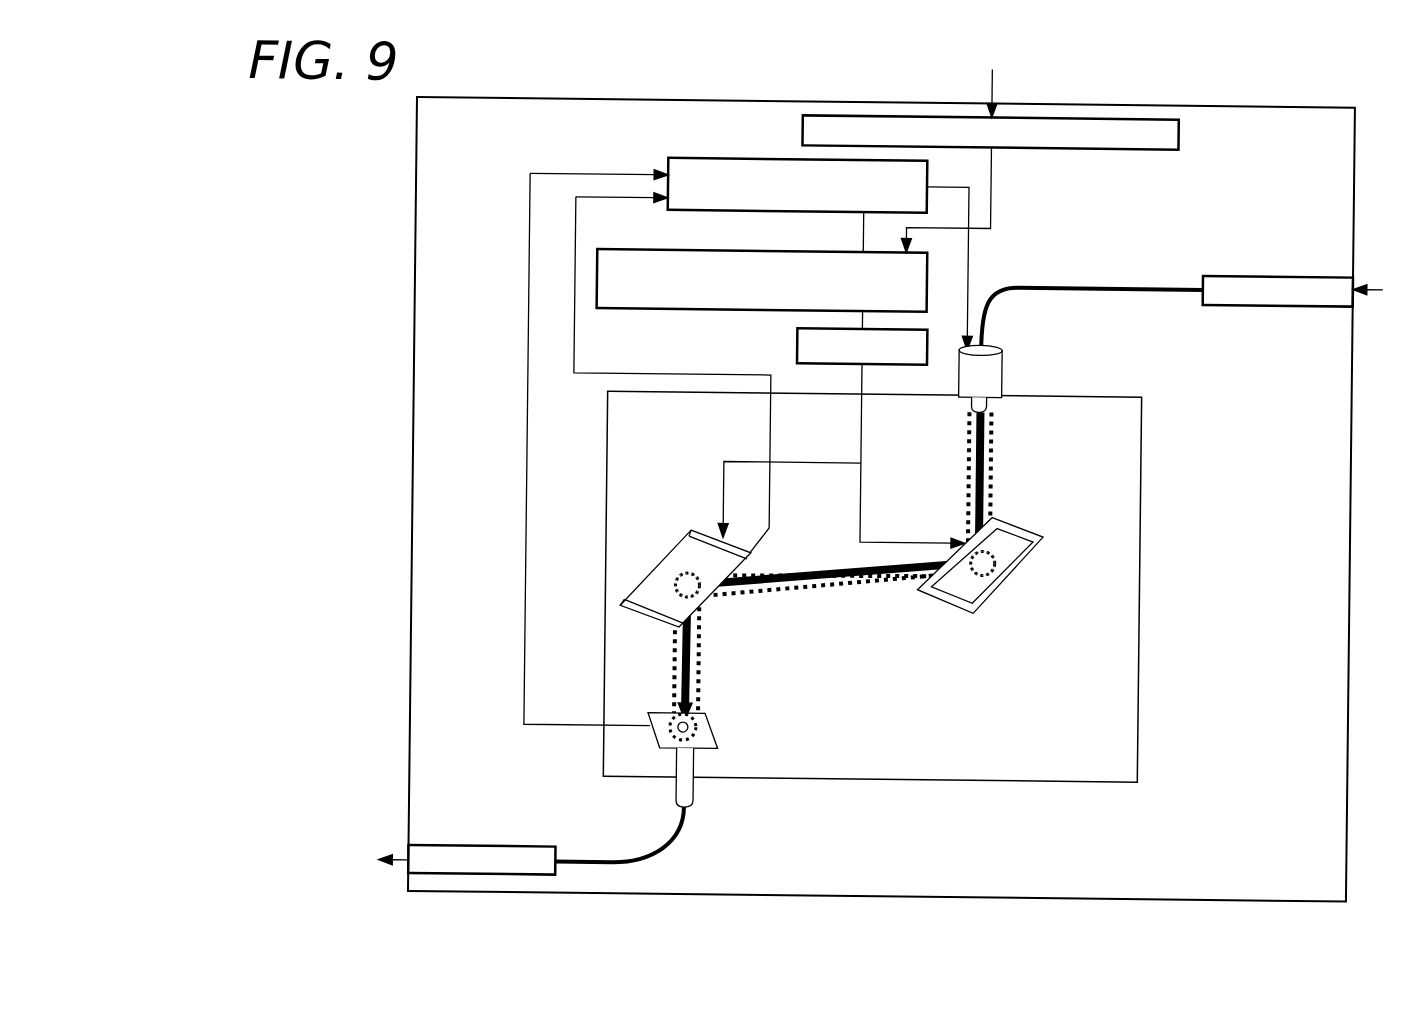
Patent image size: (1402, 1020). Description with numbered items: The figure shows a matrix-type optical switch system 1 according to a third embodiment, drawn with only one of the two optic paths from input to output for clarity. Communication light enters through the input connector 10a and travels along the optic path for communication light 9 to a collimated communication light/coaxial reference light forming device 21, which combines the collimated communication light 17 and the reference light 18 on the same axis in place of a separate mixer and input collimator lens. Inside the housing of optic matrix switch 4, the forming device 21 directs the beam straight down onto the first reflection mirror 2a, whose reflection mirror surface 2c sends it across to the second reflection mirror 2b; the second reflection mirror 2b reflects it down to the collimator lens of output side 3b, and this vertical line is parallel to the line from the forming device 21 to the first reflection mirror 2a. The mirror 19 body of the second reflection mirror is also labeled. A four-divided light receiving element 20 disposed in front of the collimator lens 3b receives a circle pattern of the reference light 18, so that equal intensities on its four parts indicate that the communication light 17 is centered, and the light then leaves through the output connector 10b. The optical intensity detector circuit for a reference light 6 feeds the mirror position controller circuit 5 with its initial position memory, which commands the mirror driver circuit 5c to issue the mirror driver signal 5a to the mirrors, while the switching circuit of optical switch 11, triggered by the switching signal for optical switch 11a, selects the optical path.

The optical switch system 1 is at (681, 97).
The first reflection mirror 2a is at (1044, 528).
The second reflection mirror 2b is at (675, 606).
The reflection mirror surface 2c is at (681, 571).
The collimator lens of output side 3b is at (684, 793).
The housing of optic matrix switch 4 is at (1146, 666).
The mirror position controller circuit 5 is at (632, 247).
The mirror driver signal 5a is at (865, 440).
The mirror driver circuit 5c is at (800, 341).
The optical intensity detector circuit for a reference light 6 is at (770, 155).
The optic path for communication light 9 is at (1183, 281).
The input connector 10a is at (1287, 296).
The output connector 10b is at (477, 845).
The switching circuit of optical switch 11 is at (1181, 133).
The switching signal for optical switch 11a is at (995, 88).
The communication light 17 is at (826, 556).
The reference light 18 is at (776, 592).
The mirror substrate 19 is at (660, 591).
The four-divided light receiving element 20 is at (704, 749).
The collimated communication light/coaxial reference light forming device 21 is at (1003, 393).